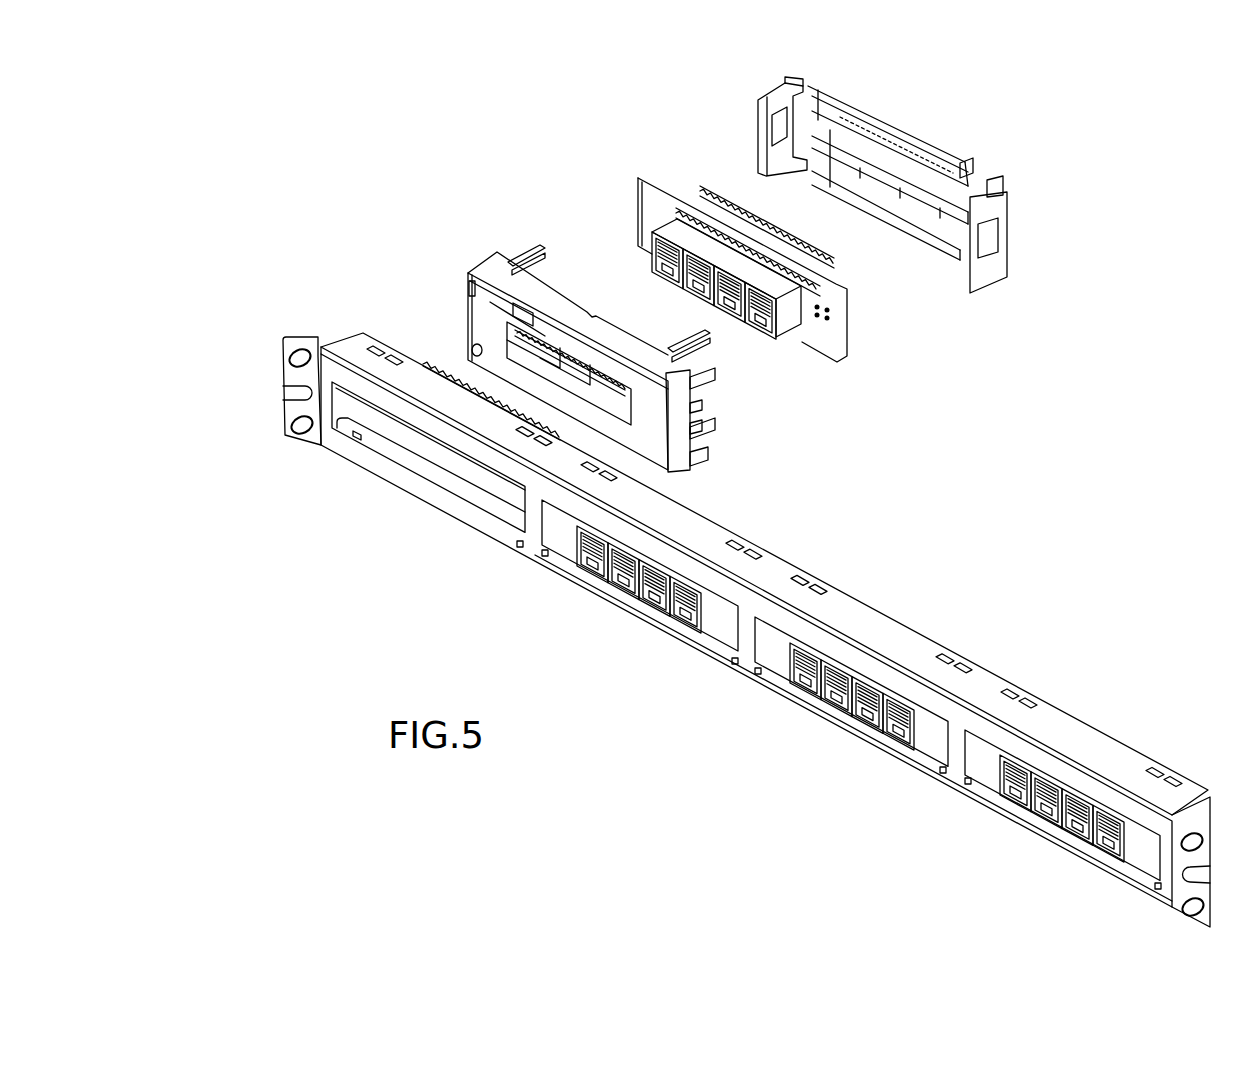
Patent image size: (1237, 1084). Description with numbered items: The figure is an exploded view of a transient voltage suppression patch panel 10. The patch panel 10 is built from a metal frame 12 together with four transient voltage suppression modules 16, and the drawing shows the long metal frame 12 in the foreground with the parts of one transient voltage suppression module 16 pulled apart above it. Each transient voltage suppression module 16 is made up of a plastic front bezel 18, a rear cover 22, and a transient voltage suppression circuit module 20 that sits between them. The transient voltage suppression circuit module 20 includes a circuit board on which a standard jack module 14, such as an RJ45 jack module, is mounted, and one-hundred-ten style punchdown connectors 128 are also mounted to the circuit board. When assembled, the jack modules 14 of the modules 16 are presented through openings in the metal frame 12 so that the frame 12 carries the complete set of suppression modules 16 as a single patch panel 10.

The transient voltage suppression patch panel 10 is at (1000, 528).
The metal frame 12 is at (282, 362).
The standard jack module 14 is at (673, 278).
The transient voltage suppression module 16 is at (1025, 308).
The plastic front bezel 18 is at (478, 263).
The transient voltage suppression circuit module 20 is at (638, 203).
The rear cover 22 is at (757, 117).
The 110 punchdown connector 128 is at (850, 258).